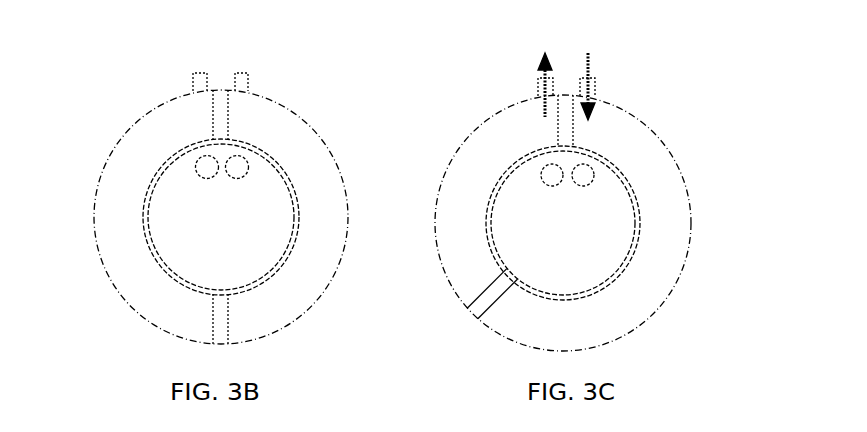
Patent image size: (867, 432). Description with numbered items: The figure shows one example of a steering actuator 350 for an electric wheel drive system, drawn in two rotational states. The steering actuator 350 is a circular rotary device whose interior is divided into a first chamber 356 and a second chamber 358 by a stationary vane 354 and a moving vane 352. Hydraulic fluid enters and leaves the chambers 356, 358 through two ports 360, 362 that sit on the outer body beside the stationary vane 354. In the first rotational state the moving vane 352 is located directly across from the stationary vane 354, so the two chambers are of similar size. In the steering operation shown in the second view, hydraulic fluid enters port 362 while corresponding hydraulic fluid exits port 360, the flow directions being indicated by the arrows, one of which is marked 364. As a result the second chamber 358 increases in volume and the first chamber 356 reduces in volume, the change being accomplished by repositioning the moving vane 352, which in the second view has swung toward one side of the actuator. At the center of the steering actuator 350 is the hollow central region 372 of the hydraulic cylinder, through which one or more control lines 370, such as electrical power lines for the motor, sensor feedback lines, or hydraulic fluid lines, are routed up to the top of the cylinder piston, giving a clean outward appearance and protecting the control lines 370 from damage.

In FIG. 3B, the steering actuator 350 is at (237, 210).
In FIG. 3C, the steering actuator 350 is at (577, 199).
In FIG. 3B, the moving vane 352 is at (220, 328).
In FIG. 3C, the moving vane 352 is at (485, 298).
In FIG. 3B, the stationary vane 354 is at (217, 128).
In FIG. 3C, the stationary vane 354 is at (570, 128).
In FIG. 3B, the first chamber 356 is at (117, 228).
In FIG. 3C, the first chamber 356 is at (463, 215).
In FIG. 3B, the second chamber 358 is at (315, 172).
In FIG. 3C, the second chamber 358 is at (658, 207).
In FIG. 3B, the port 360 is at (195, 77).
In FIG. 3C, the port 360 is at (538, 79).
In FIG. 3B, the port 362 is at (248, 78).
In FIG. 3C, the port 362 is at (597, 86).
In FIG. 3C, the direction of insertion 364 is at (593, 62).
In FIG. 3B, the control lines 370 is at (203, 165).
In FIG. 3C, the control lines 370 is at (594, 173).
In FIG. 3B, the hollow central region 372 is at (181, 233).
In FIG. 3C, the hollow central region 372 is at (600, 242).